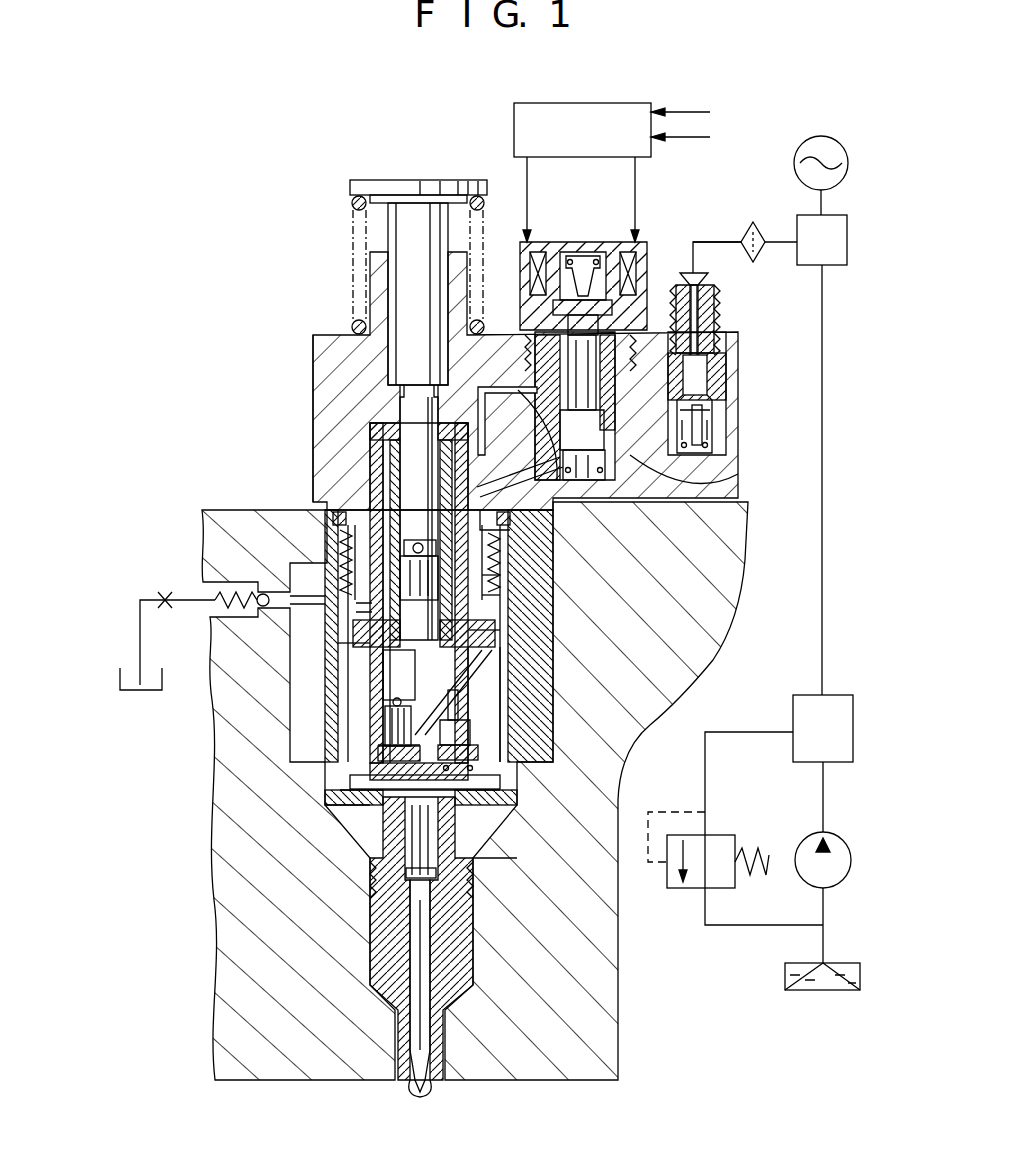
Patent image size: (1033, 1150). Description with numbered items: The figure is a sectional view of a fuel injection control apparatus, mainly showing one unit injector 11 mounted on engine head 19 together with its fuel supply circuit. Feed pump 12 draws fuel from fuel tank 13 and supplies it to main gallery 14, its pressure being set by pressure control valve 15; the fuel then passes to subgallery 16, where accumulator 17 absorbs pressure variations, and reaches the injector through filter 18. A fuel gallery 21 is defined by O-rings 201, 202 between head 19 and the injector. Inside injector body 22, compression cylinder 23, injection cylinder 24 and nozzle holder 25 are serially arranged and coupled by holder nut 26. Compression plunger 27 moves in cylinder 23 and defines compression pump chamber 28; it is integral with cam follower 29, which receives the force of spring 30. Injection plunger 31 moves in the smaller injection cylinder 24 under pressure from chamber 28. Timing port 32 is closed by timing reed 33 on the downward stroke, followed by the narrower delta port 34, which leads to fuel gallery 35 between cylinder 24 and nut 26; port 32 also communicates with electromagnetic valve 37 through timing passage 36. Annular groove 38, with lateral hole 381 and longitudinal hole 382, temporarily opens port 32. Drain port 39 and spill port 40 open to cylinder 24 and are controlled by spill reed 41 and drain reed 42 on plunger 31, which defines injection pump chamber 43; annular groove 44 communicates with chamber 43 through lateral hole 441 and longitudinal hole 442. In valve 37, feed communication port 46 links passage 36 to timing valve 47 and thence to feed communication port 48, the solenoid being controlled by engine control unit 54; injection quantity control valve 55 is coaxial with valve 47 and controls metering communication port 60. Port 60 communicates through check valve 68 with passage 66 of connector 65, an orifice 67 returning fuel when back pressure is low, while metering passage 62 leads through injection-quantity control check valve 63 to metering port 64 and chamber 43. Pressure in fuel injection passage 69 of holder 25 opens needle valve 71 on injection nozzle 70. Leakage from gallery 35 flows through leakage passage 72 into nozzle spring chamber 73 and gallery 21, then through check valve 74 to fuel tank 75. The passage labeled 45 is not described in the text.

The unit injector 11 is at (258, 206).
The feed pump 12 is at (806, 838).
The fuel tank 13 is at (785, 978).
The main gallery 14 is at (794, 706).
The pressure control valve 15 is at (682, 890).
The subgallery 16 is at (797, 232).
The accumulator 17 is at (794, 164).
The filter 18 is at (746, 236).
The engine head 19 is at (228, 918).
The fuel gallery 21 is at (540, 750).
The injector body 22 is at (332, 335).
The compression cylinder 23 is at (380, 440).
The injection cylinder 24 is at (505, 672).
The nozzle holder 25 is at (380, 872).
The holder nut 26 is at (517, 800).
The compression plunger 27 is at (415, 408).
The compression pump chamber 28 is at (452, 630).
The cam follower 29 is at (432, 183).
The spring 30 is at (350, 243).
The injection plunger 31 is at (352, 643).
The timing port 32 is at (492, 583).
The timing reed 33 is at (492, 602).
The delta port 34 is at (356, 608).
The fuel gallery 35 is at (385, 662).
The timing passage 36 is at (512, 512).
The electromagnetic valve 37 is at (617, 230).
The annular groove 38 is at (500, 546).
The drain port 39 is at (390, 682).
The spill port 40 is at (465, 732).
The spill reed 41 is at (462, 700).
The drain reed 42 is at (470, 665).
The injection pump chamber 43 is at (375, 797).
The annular groove 44 is at (390, 704).
The passage 45 is at (565, 500).
The feed communication port 46 is at (525, 335).
The timing valve 47 is at (563, 300).
The feed communication port 48 is at (638, 330).
The engine control unit 54 is at (612, 103).
The injection quantity control valve 55 is at (738, 474).
The metering communication port 60 is at (600, 412).
The metering passage 62 is at (485, 640).
The injection-quantity control check valve 63 is at (506, 768).
The metering port 64 is at (485, 868).
The connector 65 is at (722, 308).
The passage 66 is at (700, 279).
The orifice 67 is at (715, 445).
The check valve 68 is at (715, 410).
The fuel injection passage 69 is at (462, 880).
The injection nozzle 70 is at (427, 1092).
The needle valve 71 is at (422, 1028).
The leakage passage 72 is at (400, 858).
The nozzle spring chamber 73 is at (372, 892).
The check valve 74 is at (258, 590).
The fuel tank 75 is at (150, 692).
The O-ring 201 is at (400, 515).
The O-ring 202 is at (395, 770).
The lateral hole 381 is at (395, 470).
The longitudinal hole 382 is at (336, 540).
The lateral hole 441 is at (395, 738).
The longitudinal hole 442 is at (392, 748).